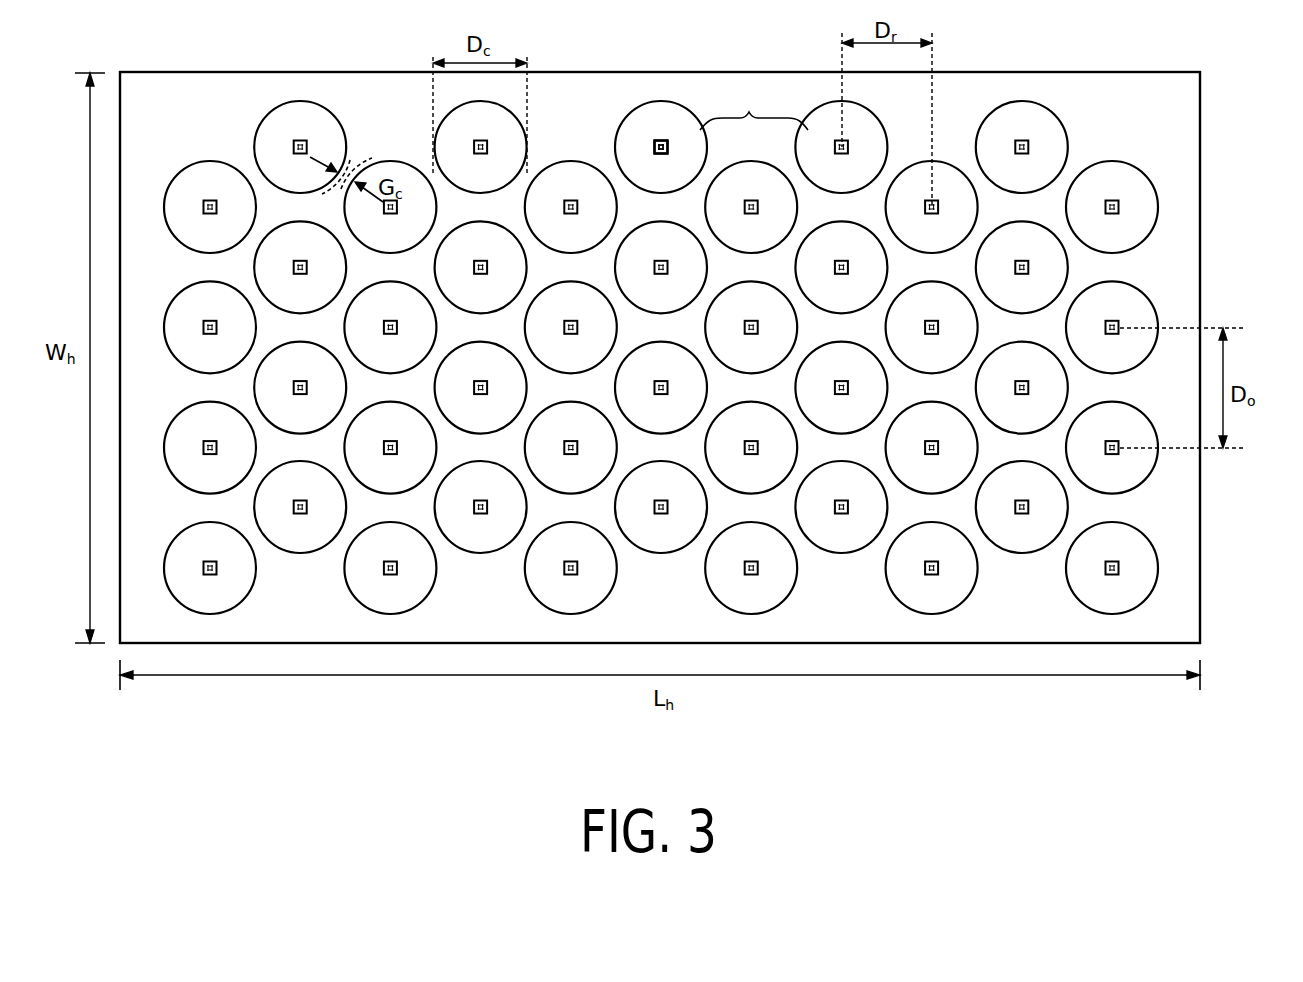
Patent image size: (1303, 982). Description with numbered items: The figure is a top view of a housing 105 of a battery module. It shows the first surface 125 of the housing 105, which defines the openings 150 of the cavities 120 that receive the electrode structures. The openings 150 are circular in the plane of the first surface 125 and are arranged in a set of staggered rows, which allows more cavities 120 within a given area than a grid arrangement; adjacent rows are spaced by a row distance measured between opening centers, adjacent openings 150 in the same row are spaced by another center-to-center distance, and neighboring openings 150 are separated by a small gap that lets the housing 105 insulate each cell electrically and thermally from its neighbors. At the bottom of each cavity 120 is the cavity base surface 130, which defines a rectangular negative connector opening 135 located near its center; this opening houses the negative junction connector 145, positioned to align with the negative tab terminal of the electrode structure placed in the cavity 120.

The housing 105 is at (1200, 262).
The cavities 120 is at (1052, 134).
The first surface 125 is at (206, 124).
The cavity base surface 130 is at (682, 185).
The negative connector opening 135 is at (661, 141).
The negative junction connector 145 is at (654, 150).
The openings 150 is at (754, 108).